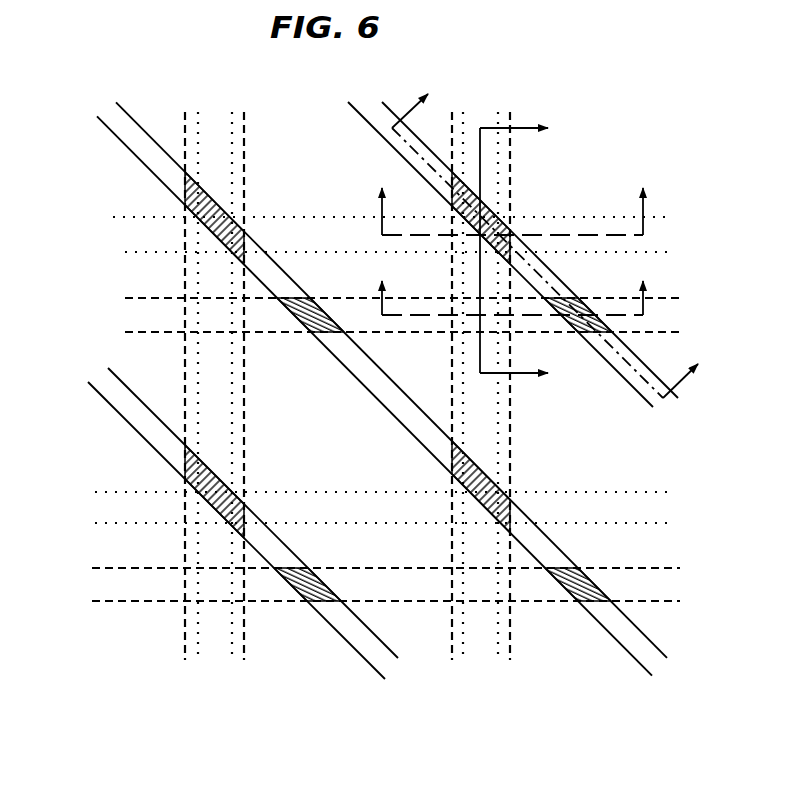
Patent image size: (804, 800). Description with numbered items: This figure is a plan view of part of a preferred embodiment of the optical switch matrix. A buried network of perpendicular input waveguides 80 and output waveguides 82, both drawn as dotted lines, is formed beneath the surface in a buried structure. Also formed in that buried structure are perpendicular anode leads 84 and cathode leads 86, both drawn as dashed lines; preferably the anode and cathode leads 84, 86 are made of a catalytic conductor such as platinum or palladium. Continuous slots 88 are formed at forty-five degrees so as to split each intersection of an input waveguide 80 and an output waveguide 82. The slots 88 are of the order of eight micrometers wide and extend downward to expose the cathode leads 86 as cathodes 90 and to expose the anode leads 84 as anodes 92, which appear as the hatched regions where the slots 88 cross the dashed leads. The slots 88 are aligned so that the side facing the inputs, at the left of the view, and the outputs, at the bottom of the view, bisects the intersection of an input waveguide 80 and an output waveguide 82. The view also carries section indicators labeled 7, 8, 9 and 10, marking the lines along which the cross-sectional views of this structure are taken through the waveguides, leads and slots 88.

The input waveguides 80 is at (137, 217).
The output waveguides 82 is at (232, 640).
The anode leads 84 is at (148, 297).
The cathode leads 86 is at (240, 628).
The slots 88 is at (107, 110).
The cathodes 90 is at (217, 208).
The anodes 92 is at (302, 330).
The section line 7- 7 is at (513, 198).
The section line 8- 8 is at (513, 285).
The section line 9- 9 is at (522, 252).
The section line 10- 10 is at (554, 240).